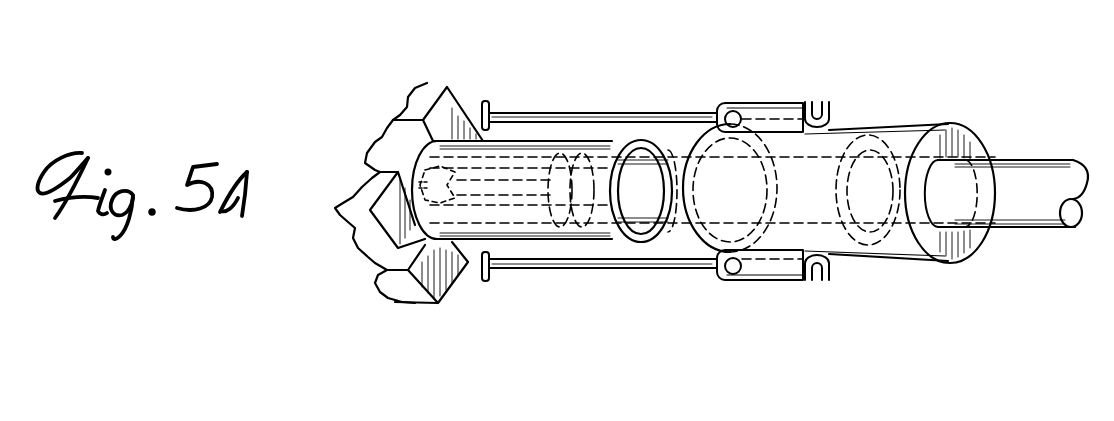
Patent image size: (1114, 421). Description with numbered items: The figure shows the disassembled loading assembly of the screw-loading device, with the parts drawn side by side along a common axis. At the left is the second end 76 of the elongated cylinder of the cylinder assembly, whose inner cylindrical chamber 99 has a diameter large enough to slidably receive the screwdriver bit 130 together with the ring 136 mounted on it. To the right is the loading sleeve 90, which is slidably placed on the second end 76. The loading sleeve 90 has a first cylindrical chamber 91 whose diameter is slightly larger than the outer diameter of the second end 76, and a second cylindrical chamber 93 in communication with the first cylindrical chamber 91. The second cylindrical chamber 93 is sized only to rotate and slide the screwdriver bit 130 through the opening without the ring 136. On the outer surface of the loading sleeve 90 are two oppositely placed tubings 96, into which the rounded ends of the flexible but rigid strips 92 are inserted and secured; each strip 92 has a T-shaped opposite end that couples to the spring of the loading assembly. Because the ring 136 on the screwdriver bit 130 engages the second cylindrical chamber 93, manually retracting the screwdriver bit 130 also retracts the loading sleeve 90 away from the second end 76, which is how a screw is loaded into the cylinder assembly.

The second end 76 is at (468, 214).
The ring 136 is at (563, 230).
The strips 92 is at (634, 112).
The inner cylindrical chamber 99 is at (660, 145).
The tubings 96 is at (790, 103).
The first cylindrical chamber 91 is at (840, 118).
The loading sleeve 90 is at (895, 259).
The second cylindrical chamber 93 is at (934, 141).
The screwdriver bit 130 is at (1050, 165).